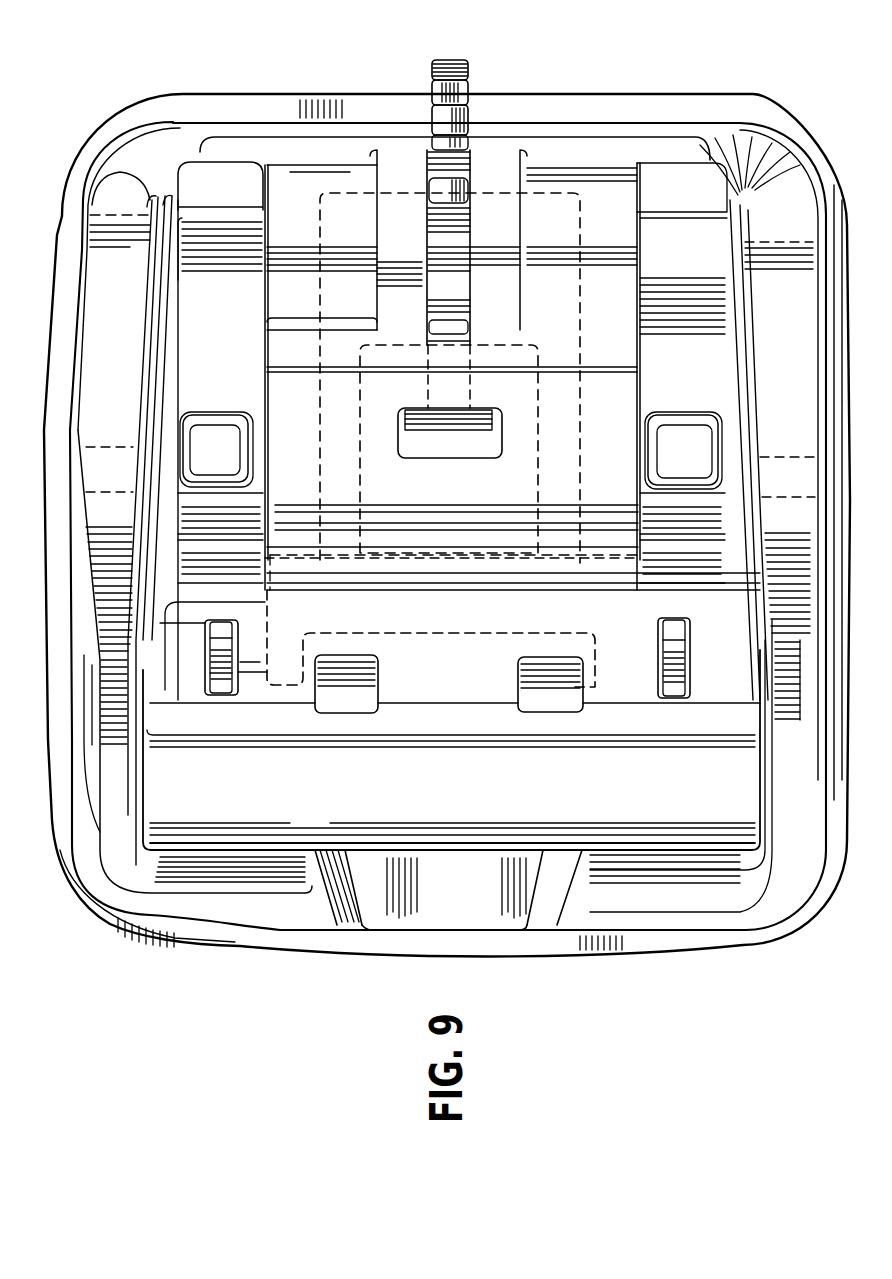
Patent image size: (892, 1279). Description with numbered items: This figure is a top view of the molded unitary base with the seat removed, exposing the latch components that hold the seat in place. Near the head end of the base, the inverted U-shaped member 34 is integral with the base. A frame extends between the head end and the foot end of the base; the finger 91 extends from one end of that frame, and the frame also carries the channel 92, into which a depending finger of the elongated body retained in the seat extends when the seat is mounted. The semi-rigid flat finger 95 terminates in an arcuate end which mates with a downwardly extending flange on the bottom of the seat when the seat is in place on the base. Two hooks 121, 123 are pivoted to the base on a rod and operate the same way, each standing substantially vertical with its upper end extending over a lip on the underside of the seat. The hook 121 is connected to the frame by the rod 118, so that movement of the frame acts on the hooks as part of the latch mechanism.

The inverted U-shaped member 34 is at (455, 176).
The finger 91 is at (470, 83).
The channel 92 is at (431, 115).
The semi-rigid flat finger 95 is at (438, 428).
The rod 118 is at (270, 672).
The hook 121 is at (210, 681).
The hook 123 is at (687, 677).